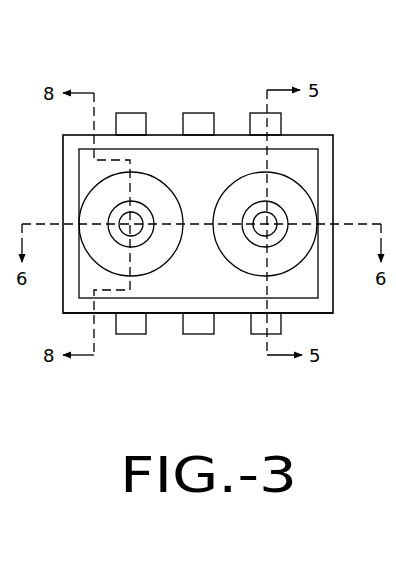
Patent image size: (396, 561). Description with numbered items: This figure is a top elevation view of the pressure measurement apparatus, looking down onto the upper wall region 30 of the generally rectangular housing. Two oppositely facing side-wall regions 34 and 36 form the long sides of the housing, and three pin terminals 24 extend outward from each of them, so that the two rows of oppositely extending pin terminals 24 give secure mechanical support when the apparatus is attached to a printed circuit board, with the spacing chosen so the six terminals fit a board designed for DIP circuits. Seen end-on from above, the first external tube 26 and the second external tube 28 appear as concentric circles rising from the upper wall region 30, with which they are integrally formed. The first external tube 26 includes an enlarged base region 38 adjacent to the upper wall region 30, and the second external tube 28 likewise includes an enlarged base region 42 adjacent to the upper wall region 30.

The pin terminals 24 is at (251, 106).
The first external tube 26 is at (283, 249).
The second external tube 28 is at (102, 206).
The upper wall region 30 is at (333, 170).
The side-wall region 34 is at (80, 315).
The side-wall region 36 is at (302, 134).
The enlarged base region 38 is at (157, 253).
The enlarged base region 42 is at (157, 200).